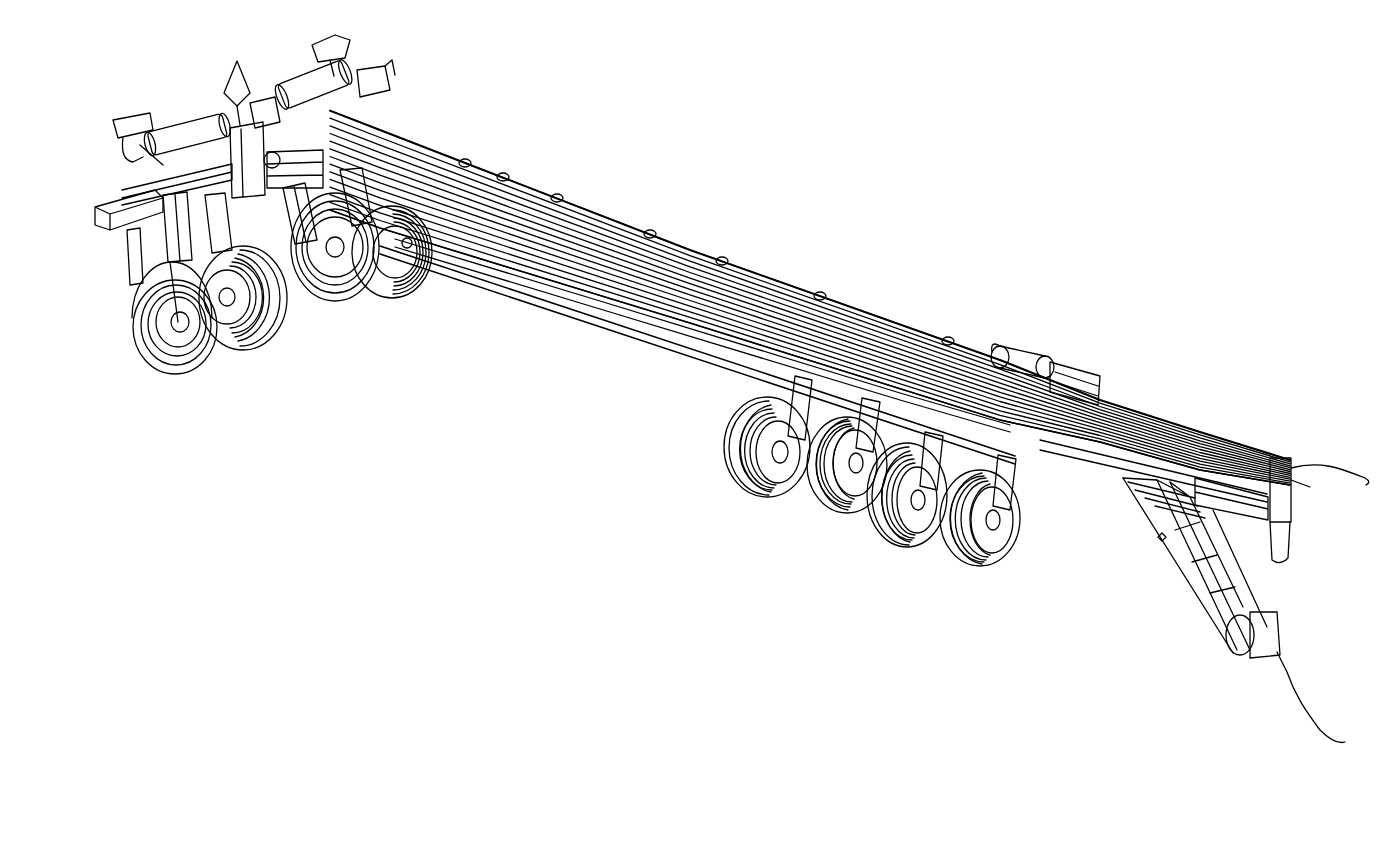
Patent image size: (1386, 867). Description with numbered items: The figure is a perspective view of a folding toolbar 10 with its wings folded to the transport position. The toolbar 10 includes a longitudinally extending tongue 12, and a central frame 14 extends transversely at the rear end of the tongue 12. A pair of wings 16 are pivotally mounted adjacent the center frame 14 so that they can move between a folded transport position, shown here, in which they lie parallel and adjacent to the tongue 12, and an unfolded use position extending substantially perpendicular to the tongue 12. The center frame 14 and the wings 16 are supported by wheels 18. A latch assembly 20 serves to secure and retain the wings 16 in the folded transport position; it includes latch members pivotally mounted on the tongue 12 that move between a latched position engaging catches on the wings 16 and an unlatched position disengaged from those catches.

The folding toolbar 10 is at (757, 201).
The tongue 12 is at (1107, 448).
The central frame 14 is at (390, 96).
The wings 16 is at (880, 323).
The wheels 18 is at (218, 354).
The latch assembly 20 is at (1081, 363).